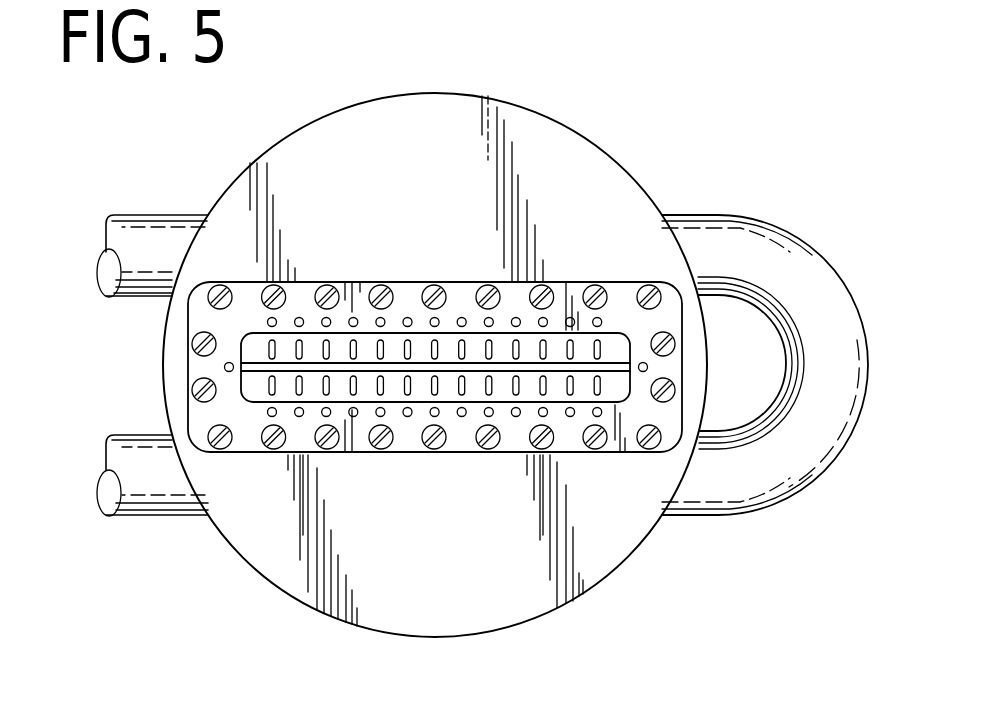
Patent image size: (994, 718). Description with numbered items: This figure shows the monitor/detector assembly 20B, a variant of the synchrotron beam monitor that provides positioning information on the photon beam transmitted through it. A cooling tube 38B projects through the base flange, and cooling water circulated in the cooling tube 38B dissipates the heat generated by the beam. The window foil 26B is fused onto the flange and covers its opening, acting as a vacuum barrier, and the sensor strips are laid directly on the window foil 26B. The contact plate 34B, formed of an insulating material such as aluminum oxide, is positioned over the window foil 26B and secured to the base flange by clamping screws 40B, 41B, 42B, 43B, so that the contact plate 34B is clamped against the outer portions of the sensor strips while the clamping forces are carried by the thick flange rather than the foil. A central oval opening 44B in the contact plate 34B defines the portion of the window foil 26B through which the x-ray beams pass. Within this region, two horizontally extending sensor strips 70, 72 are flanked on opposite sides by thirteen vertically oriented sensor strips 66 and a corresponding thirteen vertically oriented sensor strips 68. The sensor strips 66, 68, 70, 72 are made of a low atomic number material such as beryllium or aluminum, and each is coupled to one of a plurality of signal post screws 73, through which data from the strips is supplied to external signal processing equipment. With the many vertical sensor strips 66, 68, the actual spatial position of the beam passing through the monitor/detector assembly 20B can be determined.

The monitor/detector assembly 20B is at (783, 584).
The cooling tube 38B is at (823, 257).
The clamping screw 40B is at (432, 281).
The signal post screw 73 is at (410, 298).
The horizontal sensor strip 70 is at (312, 358).
The vertical sensor strip 66 is at (450, 343).
The horizontal sensor strip 72 is at (557, 358).
The central oval opening 44B is at (446, 358).
The clamping screw 41B is at (193, 343).
The clamping screw 42B is at (193, 387).
The contact plate 34B is at (249, 455).
The clamping screw 43B is at (421, 455).
The vertical sensor strip 68 is at (477, 386).
The window foil 26B is at (617, 455).